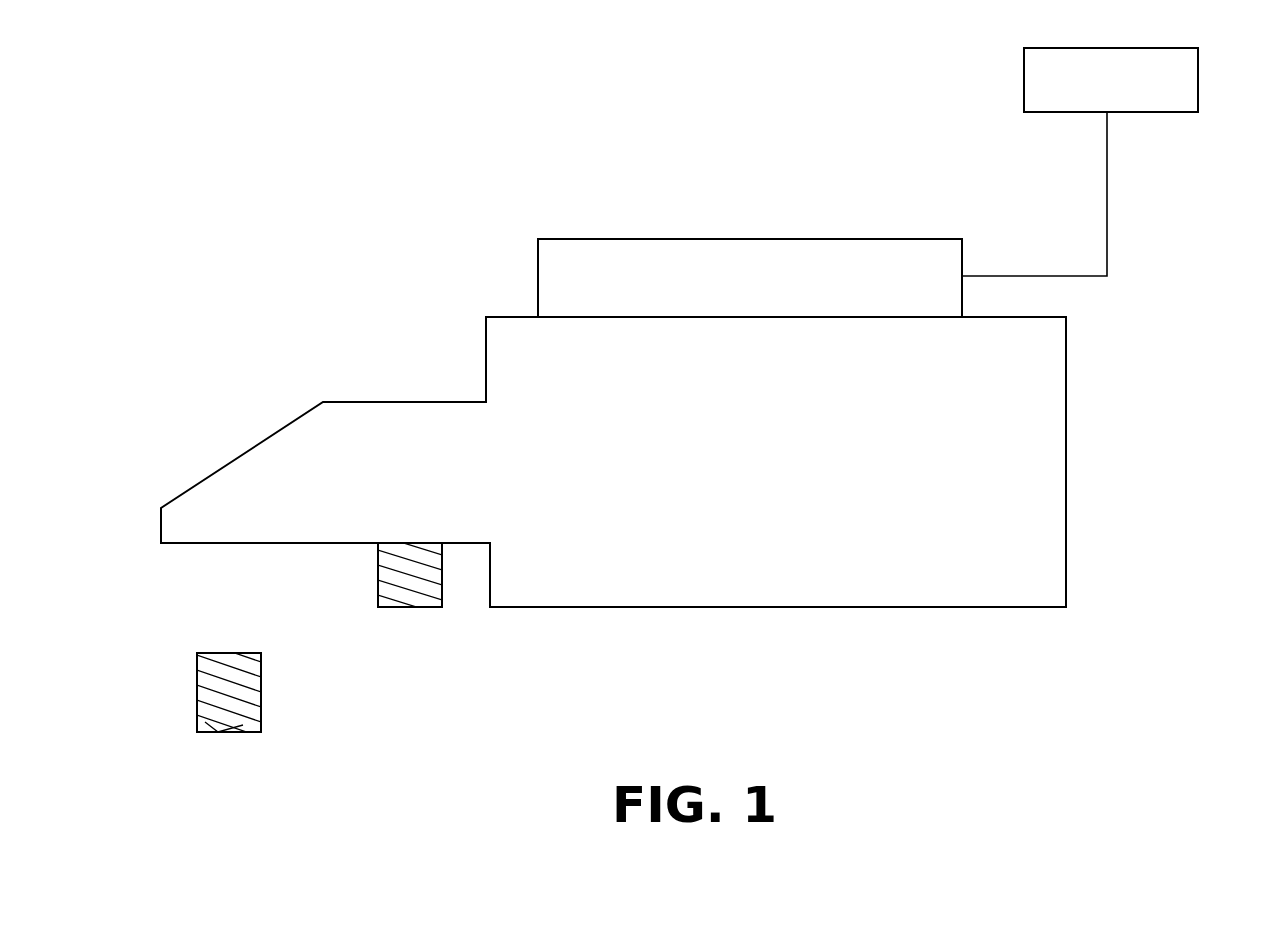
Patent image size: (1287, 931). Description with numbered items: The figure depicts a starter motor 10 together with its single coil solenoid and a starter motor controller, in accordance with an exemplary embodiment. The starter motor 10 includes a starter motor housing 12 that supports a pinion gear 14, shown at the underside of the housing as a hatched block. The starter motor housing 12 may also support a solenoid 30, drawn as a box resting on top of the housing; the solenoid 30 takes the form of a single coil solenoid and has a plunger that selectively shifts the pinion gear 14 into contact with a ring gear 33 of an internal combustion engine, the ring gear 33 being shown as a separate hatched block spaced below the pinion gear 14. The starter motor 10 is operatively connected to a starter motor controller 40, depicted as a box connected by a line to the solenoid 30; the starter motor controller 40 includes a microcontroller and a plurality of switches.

The starter motor 10 is at (1037, 643).
The starter motor housing 12 is at (1028, 465).
The pinion gear 14 is at (348, 577).
The solenoid 30 is at (520, 220).
The ring gear 33 is at (197, 683).
The starter motor controller 40 is at (1163, 130).